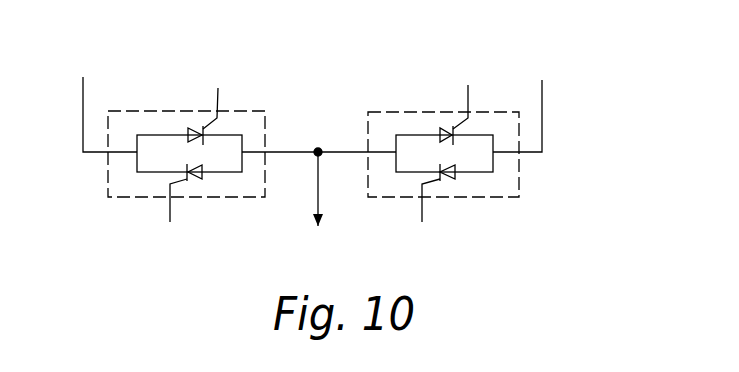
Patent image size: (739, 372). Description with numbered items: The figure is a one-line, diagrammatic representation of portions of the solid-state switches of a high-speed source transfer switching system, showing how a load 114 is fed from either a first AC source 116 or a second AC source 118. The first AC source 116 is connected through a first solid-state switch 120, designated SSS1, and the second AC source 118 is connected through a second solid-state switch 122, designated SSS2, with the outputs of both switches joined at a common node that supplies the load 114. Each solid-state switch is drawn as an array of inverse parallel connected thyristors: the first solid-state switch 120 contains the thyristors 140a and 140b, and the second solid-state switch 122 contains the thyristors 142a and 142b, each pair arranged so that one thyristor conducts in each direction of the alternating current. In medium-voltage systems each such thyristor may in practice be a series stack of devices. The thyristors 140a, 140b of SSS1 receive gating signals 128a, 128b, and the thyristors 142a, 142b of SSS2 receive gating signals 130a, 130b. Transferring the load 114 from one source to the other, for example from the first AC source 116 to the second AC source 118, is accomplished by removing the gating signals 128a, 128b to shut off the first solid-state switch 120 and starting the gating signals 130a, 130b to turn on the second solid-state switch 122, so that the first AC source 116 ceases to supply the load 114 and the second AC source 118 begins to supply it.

The load 114 is at (315, 197).
The first AC source 116 is at (83, 93).
The second AC source 118 is at (544, 103).
The first solid-state switch 120 is at (262, 106).
The second solid-state switch 122 is at (492, 106).
The gating signal 128a is at (222, 102).
The gating signal 128b is at (169, 212).
The gating signal 130a is at (469, 100).
The gating signal 130b is at (422, 210).
The thyristor 140a is at (197, 126).
The thyristor 140b is at (195, 178).
The thyristor 142a is at (443, 126).
The thyristor 142b is at (448, 178).